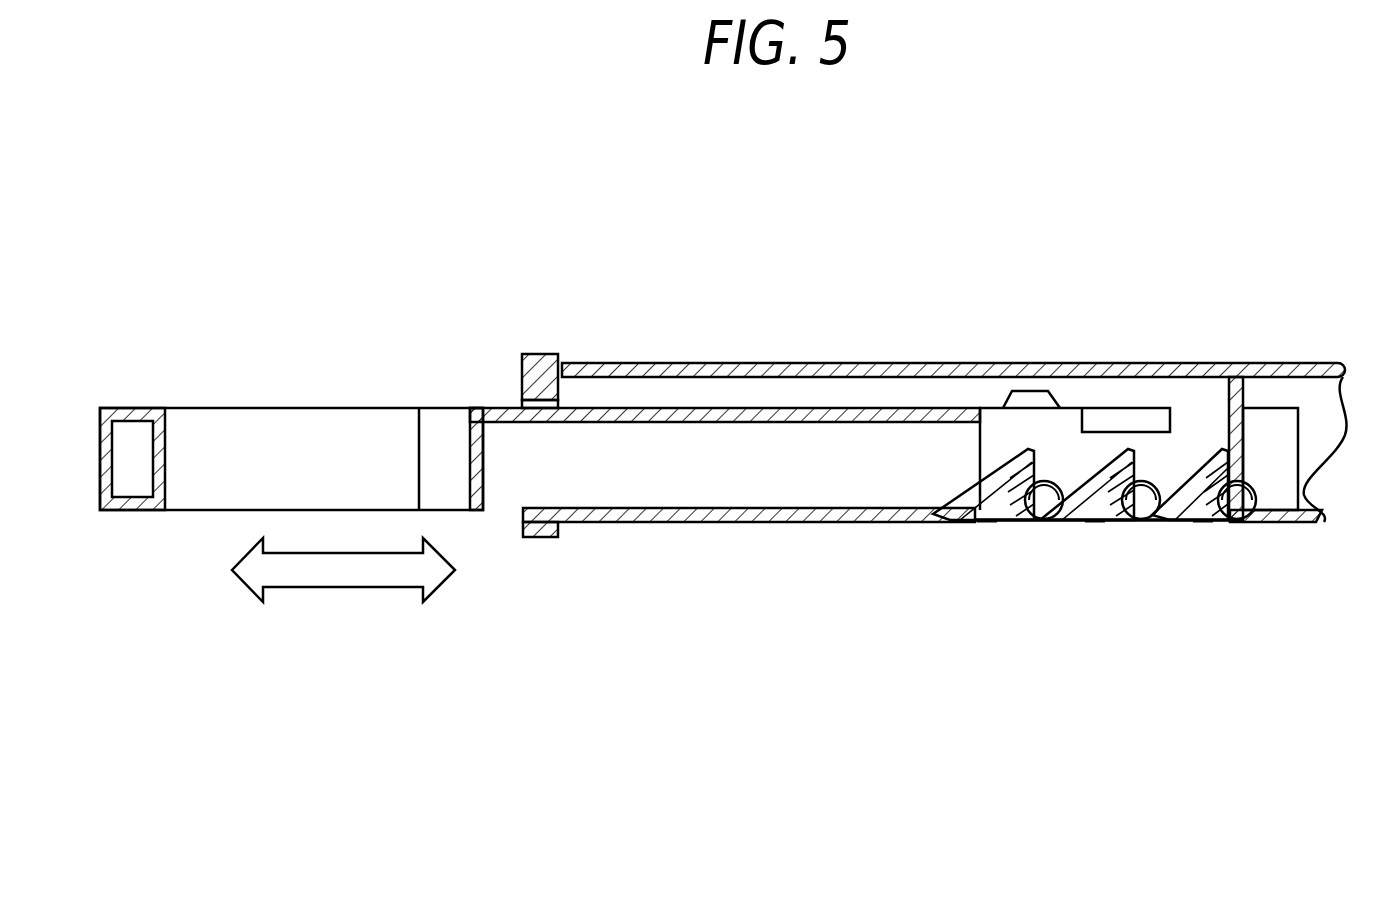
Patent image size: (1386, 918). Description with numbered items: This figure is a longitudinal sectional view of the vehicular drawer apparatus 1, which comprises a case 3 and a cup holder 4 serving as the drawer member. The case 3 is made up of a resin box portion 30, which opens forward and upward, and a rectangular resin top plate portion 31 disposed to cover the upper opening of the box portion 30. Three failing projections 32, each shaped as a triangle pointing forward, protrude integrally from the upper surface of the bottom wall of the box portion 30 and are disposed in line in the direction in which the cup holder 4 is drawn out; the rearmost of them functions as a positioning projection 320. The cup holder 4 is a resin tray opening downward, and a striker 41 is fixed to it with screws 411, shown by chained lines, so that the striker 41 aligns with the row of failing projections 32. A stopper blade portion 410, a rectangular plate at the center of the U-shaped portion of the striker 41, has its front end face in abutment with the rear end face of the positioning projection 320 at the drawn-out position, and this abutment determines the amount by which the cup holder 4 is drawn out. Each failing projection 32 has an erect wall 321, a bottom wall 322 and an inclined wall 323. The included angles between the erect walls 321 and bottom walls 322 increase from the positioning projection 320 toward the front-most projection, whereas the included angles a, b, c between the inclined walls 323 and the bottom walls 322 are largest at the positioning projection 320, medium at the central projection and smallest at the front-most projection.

The vehicular drawer apparatus 1 is at (318, 277).
The case 3 is at (792, 346).
The cup holder 4 is at (293, 387).
The box portion 30 is at (713, 522).
The top plate portion 31 is at (650, 368).
The failing projection 32 is at (1055, 545).
The striker 41 is at (1077, 390).
The stopper blade portion 410 is at (1240, 377).
The screw 411 is at (1030, 400).
The positioning projection 320 is at (1223, 523).
The erect wall 321 is at (1230, 492).
The bottom wall 322 is at (1260, 525).
The inclined wall 323 is at (1162, 525).
The included angle of inclined wall of positioning projection a is at (1203, 525).
The included angle of inclined wall of central failing projection b is at (1095, 525).
The included angle of inclined wall of front-most failing projection c is at (987, 525).